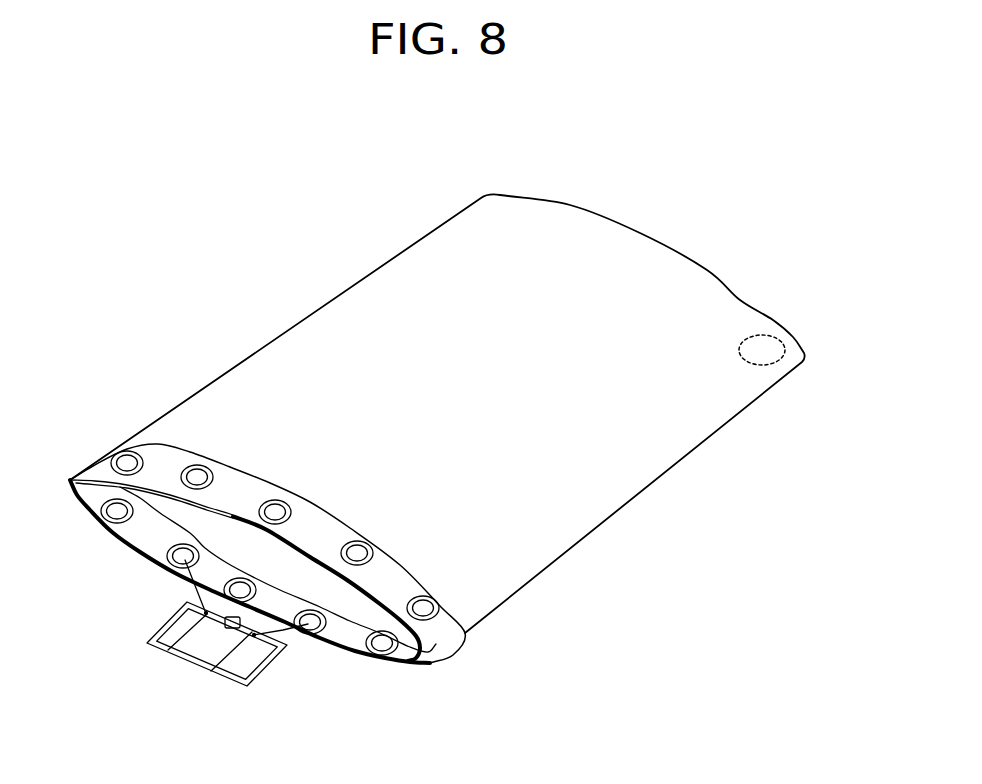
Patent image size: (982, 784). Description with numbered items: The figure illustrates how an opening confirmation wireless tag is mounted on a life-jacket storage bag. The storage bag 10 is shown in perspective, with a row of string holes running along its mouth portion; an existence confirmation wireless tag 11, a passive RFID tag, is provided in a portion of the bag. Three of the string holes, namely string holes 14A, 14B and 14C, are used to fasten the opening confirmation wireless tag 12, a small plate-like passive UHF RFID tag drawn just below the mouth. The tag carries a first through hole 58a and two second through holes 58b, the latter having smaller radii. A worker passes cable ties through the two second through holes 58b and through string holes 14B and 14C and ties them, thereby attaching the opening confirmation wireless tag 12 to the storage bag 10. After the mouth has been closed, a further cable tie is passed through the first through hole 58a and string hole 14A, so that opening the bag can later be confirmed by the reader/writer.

The storage bag 10 is at (303, 336).
The existence confirmation wireless tag 11 is at (770, 334).
The opening confirmation wireless tag 12 is at (191, 664).
The string hole 14A is at (283, 512).
The string hole 14B is at (167, 553).
The string hole 14C is at (313, 627).
The first through hole 58a is at (185, 663).
The second through hole 58b is at (165, 650).